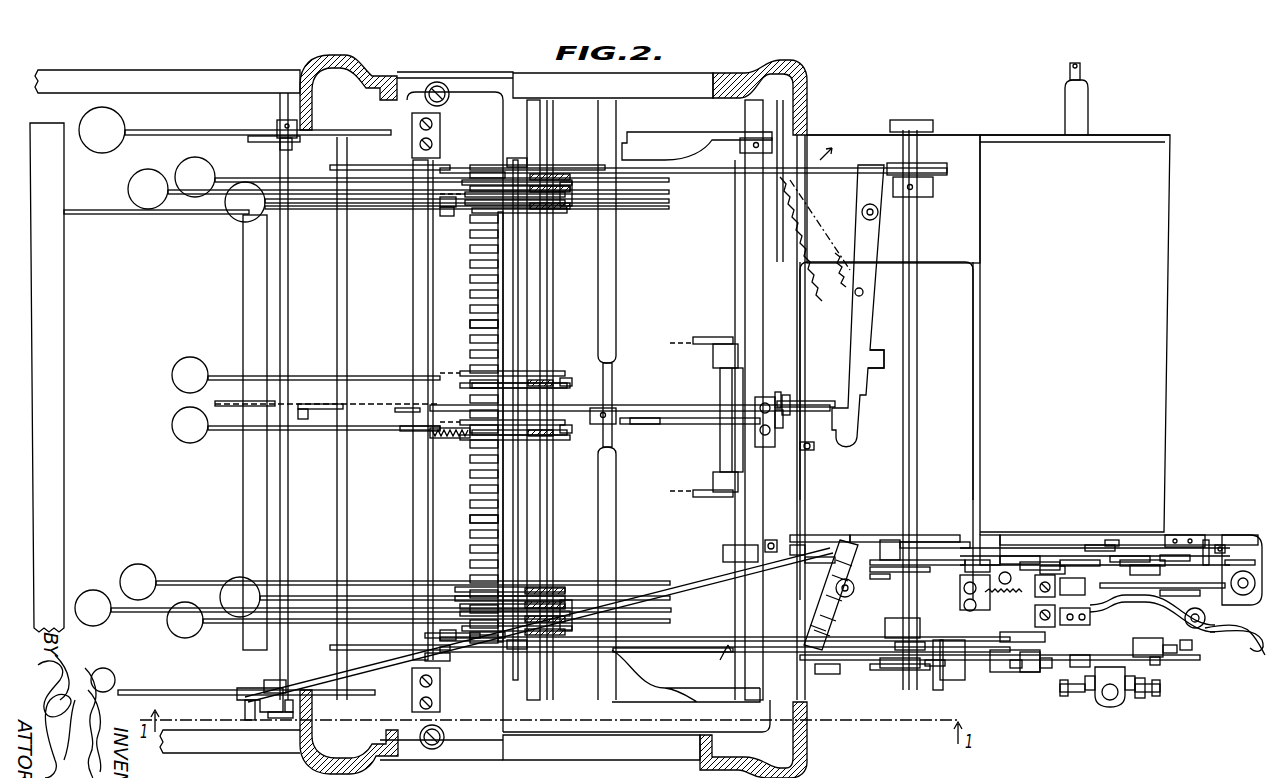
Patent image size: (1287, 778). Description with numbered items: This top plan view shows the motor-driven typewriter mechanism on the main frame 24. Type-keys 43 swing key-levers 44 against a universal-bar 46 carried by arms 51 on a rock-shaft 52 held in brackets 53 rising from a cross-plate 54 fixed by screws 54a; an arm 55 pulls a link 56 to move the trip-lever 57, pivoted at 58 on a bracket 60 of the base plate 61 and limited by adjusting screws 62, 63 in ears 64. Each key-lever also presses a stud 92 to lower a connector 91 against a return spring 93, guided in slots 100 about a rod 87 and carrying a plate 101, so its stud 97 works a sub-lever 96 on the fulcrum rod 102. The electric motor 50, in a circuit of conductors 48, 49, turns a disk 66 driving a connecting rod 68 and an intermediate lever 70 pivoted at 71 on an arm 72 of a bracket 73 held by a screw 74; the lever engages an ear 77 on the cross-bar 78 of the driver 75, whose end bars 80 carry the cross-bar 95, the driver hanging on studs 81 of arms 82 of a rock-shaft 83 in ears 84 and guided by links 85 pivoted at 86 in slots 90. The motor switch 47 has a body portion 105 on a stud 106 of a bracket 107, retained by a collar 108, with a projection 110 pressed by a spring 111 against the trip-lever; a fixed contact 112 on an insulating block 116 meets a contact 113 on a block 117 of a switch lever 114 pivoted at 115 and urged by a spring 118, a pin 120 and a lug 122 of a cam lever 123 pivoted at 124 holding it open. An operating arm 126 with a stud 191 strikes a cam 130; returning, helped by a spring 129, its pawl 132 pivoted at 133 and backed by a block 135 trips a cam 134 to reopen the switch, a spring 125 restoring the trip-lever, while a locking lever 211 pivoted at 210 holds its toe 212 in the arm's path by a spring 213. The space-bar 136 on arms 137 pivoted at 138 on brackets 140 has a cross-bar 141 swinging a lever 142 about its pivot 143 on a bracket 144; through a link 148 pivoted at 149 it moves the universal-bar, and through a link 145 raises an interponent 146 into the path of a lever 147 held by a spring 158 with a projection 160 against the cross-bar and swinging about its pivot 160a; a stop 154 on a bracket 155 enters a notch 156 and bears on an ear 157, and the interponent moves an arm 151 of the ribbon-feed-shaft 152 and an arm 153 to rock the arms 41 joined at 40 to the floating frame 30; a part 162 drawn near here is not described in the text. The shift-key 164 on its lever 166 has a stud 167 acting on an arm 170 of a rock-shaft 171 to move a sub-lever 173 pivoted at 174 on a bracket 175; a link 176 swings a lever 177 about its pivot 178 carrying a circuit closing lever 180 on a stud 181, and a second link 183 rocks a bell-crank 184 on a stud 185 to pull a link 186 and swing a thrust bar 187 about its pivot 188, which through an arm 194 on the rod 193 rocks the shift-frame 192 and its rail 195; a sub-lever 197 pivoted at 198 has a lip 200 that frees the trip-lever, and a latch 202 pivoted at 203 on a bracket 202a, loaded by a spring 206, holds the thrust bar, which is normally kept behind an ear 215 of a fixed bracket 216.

The main frame 24 is at (240, 70).
The space-bar 136 is at (47, 377).
The cross-bar 141 is at (243, 503).
The rock-shaft 171 is at (288, 541).
The universal-bar 46 is at (347, 503).
The rock-shaft 52 is at (413, 296).
The cross-bar or plate 54 is at (488, 690).
The screws 54a is at (449, 100).
The brackets 53 is at (412, 125).
The shift-key 164 is at (113, 677).
The shift-key-lever 166 is at (170, 130).
The arm 170 is at (277, 128).
The stud 167 is at (282, 142).
The sub-lever 173 is at (237, 700).
The pivot 174 is at (248, 718).
The bracket 175 is at (293, 705).
The second link 183 is at (330, 680).
The type-keys 43 is at (172, 162).
The key-levers 44 is at (252, 188).
The arms 137 is at (118, 214).
The lever 142 is at (244, 401).
The link 148 is at (320, 404).
The pivotal connection 149 is at (303, 419).
The bracket 144 is at (408, 412).
The pivot 143 is at (405, 432).
The arms 51 is at (374, 166).
The brackets 140 is at (440, 212).
The pivot 138 is at (446, 207).
The universal-bar or cross-bar 95 is at (497, 427).
The slots 100 is at (470, 325).
The rod 87 is at (470, 519).
The fulcrum rod 102 is at (540, 500).
The rail 195 is at (616, 269).
The ribbon-feed-shaft 152 is at (592, 531).
The arm 151 is at (634, 424).
The arm 153 is at (690, 424).
The interponent 146 is at (694, 405).
The end bars 80 is at (724, 173).
The rod 193 is at (745, 251).
The shift-frame 192 is at (695, 134).
The link 56 is at (645, 655).
The actuating frame or driver 75 is at (778, 409).
The link 176 is at (543, 436).
The floating frame 30 is at (710, 337).
The arms 41 is at (713, 352).
The pivotal connection 40 is at (722, 368).
The bracket 155 is at (765, 447).
The notch 156 is at (779, 428).
The ear 157 is at (777, 392).
The stop 154 is at (790, 391).
The link 145 is at (830, 399).
The clip 162 is at (807, 450).
The lever 147 is at (851, 343).
The projection 160 is at (885, 364).
The pivot 160a is at (862, 213).
The spring 158 is at (843, 270).
The rock-shaft 83 is at (917, 316).
The ears 84 is at (910, 120).
The studs 81 is at (930, 166).
The arms 82 is at (930, 189).
The base plate 61 is at (872, 135).
The cross-bar 78 is at (855, 483).
The electric motor 50 is at (1168, 351).
The conductors 49 is at (1080, 71).
The pivotal connection 86 is at (516, 158).
The links 85 is at (488, 172).
The slots 90 is at (476, 180).
The stud 92 is at (474, 192).
The connector or interponent 91 is at (512, 213).
The return spring 93 is at (442, 438).
The sub-lever 96 is at (552, 210).
The projection or stud 97 is at (566, 206).
The plates 101 is at (555, 186).
The arm 55 is at (425, 657).
The arm 194 is at (723, 555).
The pivot 188 is at (781, 534).
The bell-crank 184 is at (830, 535).
The thrust bar 187 is at (795, 555).
The fixed stud 185 is at (824, 570).
The ear 77 is at (880, 545).
The link 186 is at (900, 535).
The connecting rod 68 is at (930, 542).
The pivot 71 is at (908, 570).
The intermediate lever 70 is at (900, 572).
The arm 72 is at (877, 597).
The pivot 198 is at (836, 593).
The sub-lever 197 is at (812, 632).
The spring 206 is at (935, 638).
The screw 74 is at (958, 570).
The bracket 73 is at (990, 535).
The pivot 124 is at (1015, 556).
The cam 130 is at (1038, 562).
The toe 212 is at (1054, 566).
The pivot 133 is at (1080, 560).
The stud 191 is at (1098, 545).
The operating arm 126 is at (1128, 556).
The block 135 is at (1145, 565).
The disk 66 is at (1109, 539).
The pawl 132 is at (1142, 551).
The spring 129 is at (1176, 552).
The fixed bracket 216 is at (1185, 535).
The ear 215 is at (1206, 540).
The cam 134 is at (1222, 545).
The bracket 107 is at (1256, 529).
The lug 122 is at (1177, 565).
The stud 106 is at (1248, 580).
The locking lever 211 is at (983, 565).
The pivot 210 is at (1030, 572).
The spring 213 is at (995, 586).
The spring 118 is at (1020, 592).
The fixed contact 112 is at (1056, 597).
The contact 113 is at (1035, 616).
The block 116 is at (1079, 609).
The conductors 48 is at (1152, 605).
The spring 125 is at (1195, 606).
The body portion 105 is at (1200, 628).
The cam lever 123 is at (1235, 639).
The collar 108 is at (1240, 635).
The pin 120 is at (1148, 643).
The lug or projection 110 is at (1153, 660).
The spring 111 is at (1177, 652).
The pivot 115 is at (1195, 654).
The block 117 is at (1027, 635).
The switch lever 114 is at (1080, 667).
The motor switch 47 is at (1046, 668).
The fixed pivot 178 is at (1028, 672).
The lever 177 is at (1000, 672).
The stud 181 is at (1016, 668).
The pivot 203 is at (955, 680).
The latch 202 is at (935, 690).
The bracket 202a is at (945, 672).
The lip 200 is at (830, 662).
The circuit closing lever 180 is at (835, 672).
The trip-lever 57 is at (1110, 687).
The pivot 58 is at (1124, 710).
The bracket 60 is at (1093, 710).
The adjusting screw 63 is at (1063, 696).
The adjusting screw 62 is at (1160, 690).
The ears 64 is at (1140, 698).